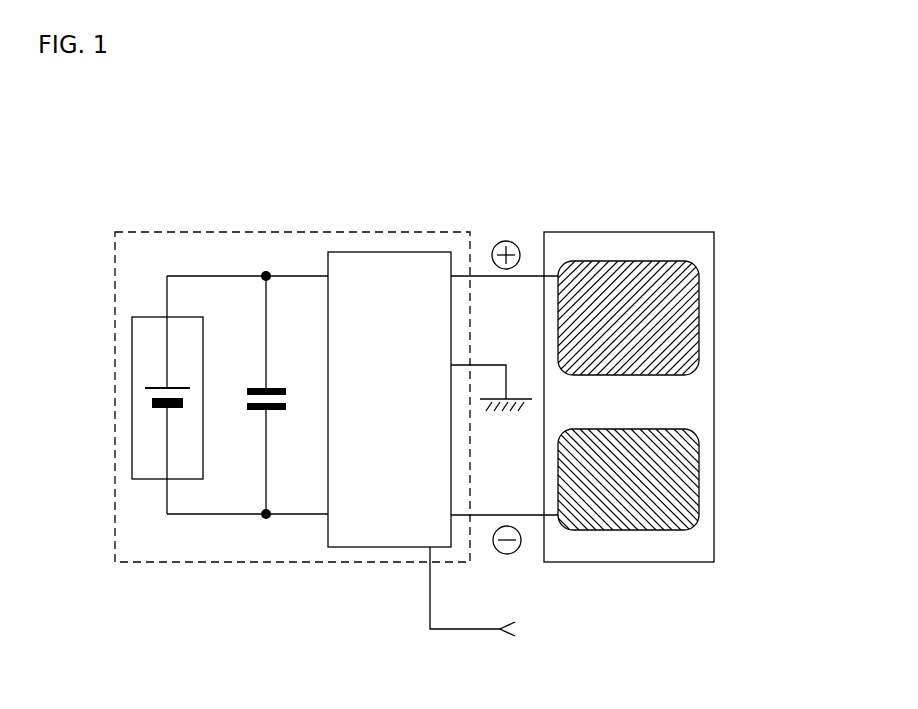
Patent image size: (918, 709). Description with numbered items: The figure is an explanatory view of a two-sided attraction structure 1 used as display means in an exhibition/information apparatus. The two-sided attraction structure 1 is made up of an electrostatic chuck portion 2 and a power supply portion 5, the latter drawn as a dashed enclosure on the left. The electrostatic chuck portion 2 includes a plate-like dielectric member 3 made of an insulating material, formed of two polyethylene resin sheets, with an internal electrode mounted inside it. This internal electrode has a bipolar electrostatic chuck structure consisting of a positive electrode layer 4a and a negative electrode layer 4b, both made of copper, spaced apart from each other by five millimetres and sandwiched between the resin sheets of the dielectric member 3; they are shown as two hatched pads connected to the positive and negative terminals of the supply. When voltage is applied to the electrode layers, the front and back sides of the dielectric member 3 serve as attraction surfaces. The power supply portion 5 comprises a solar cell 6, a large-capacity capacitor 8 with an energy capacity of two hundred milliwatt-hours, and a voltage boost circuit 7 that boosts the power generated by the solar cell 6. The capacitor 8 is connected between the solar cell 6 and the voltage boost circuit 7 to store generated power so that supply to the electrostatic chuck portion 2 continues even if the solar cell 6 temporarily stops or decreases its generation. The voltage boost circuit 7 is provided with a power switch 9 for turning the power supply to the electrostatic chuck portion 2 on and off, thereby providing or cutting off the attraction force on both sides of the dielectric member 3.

The two-sided attraction structure 1 is at (500, 212).
The electrostatic chuck portion 2 is at (603, 231).
The dielectric member 3 is at (692, 250).
The positive electrode layer 4a is at (696, 318).
The negative electrode layer 4b is at (696, 478).
The power supply portion 5 is at (247, 231).
The solar cell 6 is at (132, 462).
The voltage boost circuit 7 is at (362, 547).
The large-capacity capacitor 8 is at (256, 410).
The power switch 9 is at (513, 636).